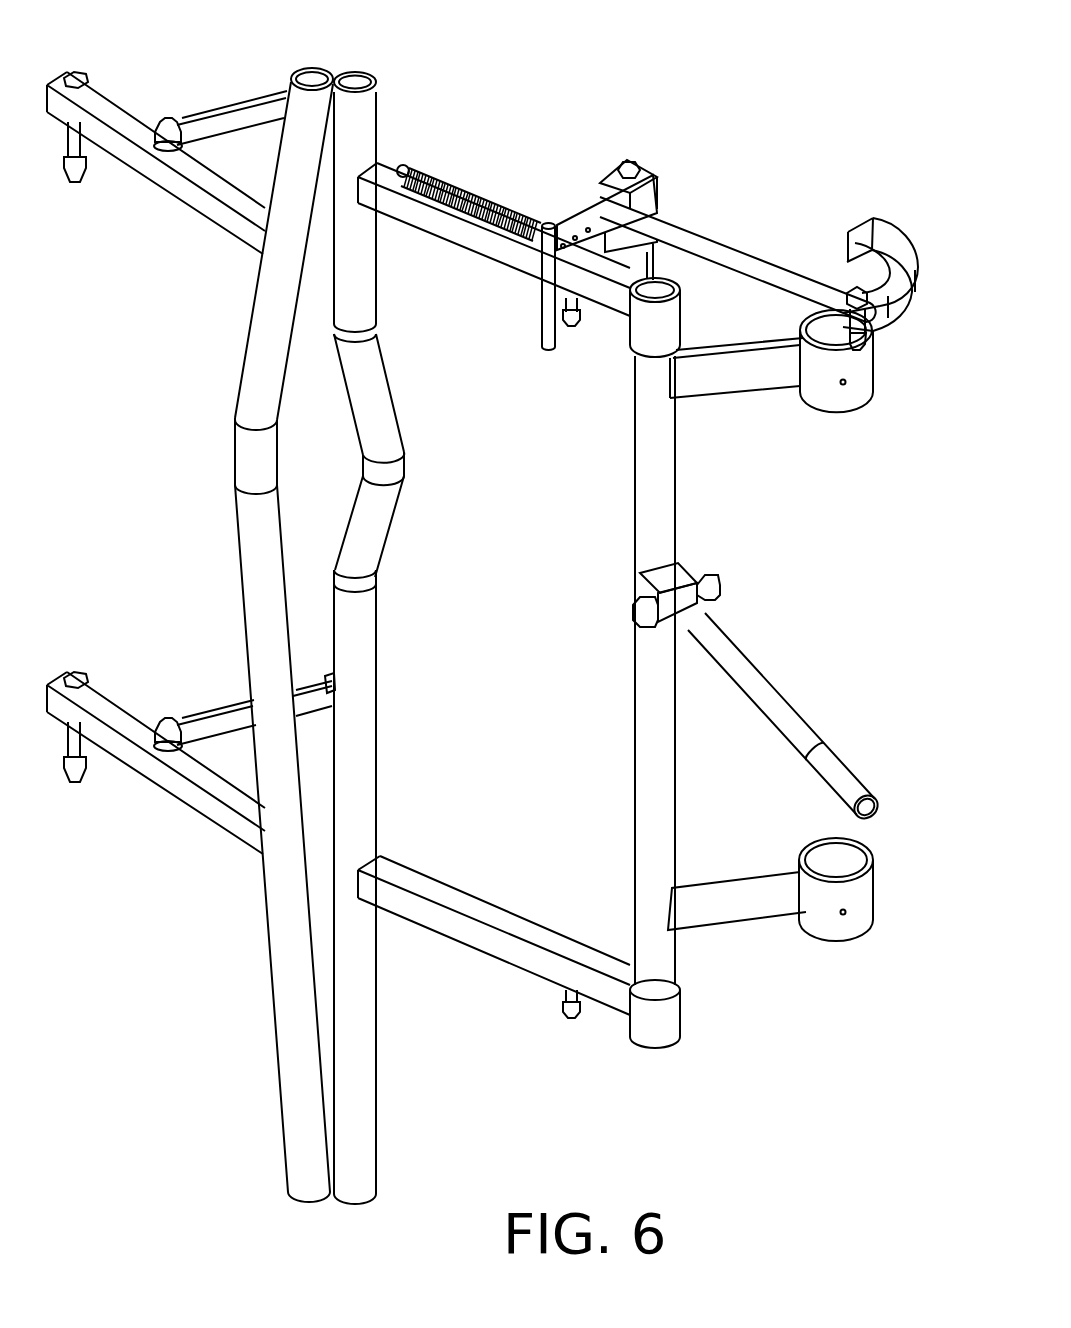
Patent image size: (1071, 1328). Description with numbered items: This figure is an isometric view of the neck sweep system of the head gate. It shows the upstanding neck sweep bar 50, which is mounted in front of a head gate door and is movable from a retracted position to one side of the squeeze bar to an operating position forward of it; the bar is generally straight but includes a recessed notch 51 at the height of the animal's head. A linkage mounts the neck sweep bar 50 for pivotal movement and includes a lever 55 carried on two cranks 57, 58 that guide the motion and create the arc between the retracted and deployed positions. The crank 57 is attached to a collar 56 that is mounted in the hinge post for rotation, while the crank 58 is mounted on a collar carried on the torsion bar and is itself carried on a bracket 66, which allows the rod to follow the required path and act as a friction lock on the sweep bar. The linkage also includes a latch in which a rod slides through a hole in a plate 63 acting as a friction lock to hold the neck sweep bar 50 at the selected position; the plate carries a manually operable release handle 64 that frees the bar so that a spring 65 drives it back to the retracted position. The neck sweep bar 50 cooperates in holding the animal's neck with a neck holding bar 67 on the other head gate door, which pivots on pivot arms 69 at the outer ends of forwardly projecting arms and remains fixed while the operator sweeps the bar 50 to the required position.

The neck sweep bar 50 is at (369, 717).
The recessed notch 51 is at (372, 505).
The lever 55 is at (468, 247).
The collar 56 is at (850, 923).
The crank 57 is at (750, 890).
The crank 58 is at (700, 243).
The plate 63 is at (587, 223).
The release handle 64 is at (548, 333).
The spring 65 is at (467, 183).
The bracket 66 is at (890, 243).
The neck holding bar 67 is at (297, 903).
The pivot arms 69 is at (187, 185).